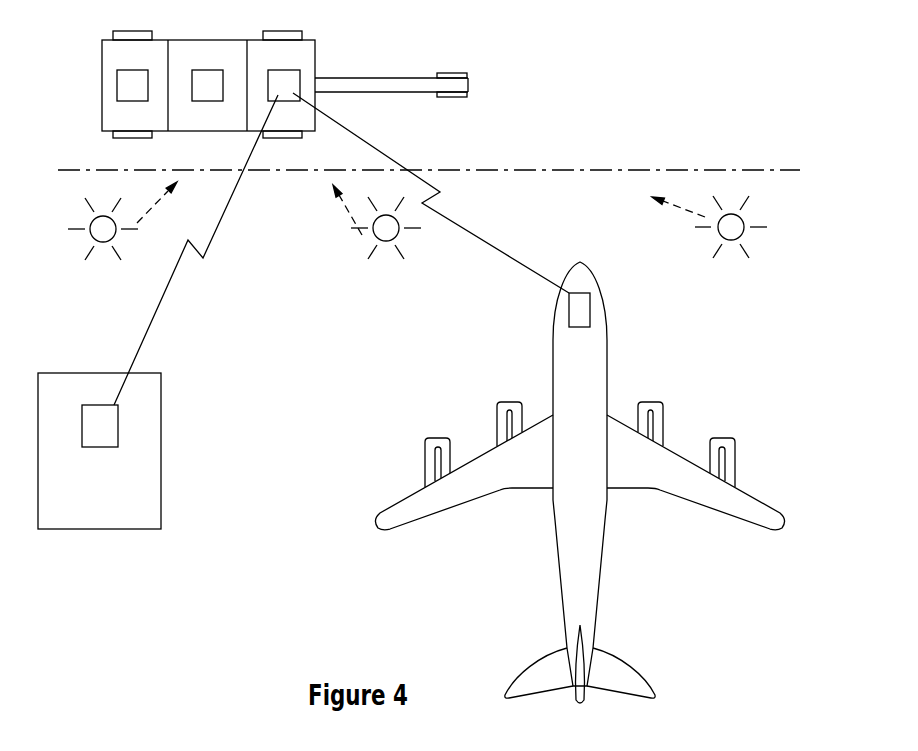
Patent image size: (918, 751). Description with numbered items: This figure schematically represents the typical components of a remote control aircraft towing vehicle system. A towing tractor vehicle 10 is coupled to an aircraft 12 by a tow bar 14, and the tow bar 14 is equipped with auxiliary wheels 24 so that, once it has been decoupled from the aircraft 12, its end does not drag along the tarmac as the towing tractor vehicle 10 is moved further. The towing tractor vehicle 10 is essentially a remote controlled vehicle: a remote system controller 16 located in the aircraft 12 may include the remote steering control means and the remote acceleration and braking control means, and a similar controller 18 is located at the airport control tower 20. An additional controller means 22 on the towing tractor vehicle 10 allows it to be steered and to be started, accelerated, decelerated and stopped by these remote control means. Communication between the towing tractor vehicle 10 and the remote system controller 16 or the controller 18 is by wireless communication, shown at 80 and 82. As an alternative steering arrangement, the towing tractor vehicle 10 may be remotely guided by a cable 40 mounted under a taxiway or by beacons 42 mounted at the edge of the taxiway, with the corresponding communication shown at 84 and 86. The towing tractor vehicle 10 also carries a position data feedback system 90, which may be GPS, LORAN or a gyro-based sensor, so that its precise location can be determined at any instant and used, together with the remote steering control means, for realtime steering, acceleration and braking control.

The towing tractor vehicle 10 is at (307, 33).
The aircraft 12 is at (593, 545).
The tow bar 14 is at (360, 78).
The remote system controller 16 is at (590, 310).
The controller 18 is at (110, 430).
The airport control tower 20 is at (147, 498).
The controller means 22 is at (122, 89).
The auxiliary wheels 24 is at (450, 72).
The guidance cable 40 is at (660, 168).
The beacons 42 is at (417, 244).
The wireless communication 80 is at (500, 250).
The wireless communication 82 is at (152, 324).
The communication with guidance cable 84 is at (283, 100).
The communication with beacons 86 is at (150, 208).
The position data feedback system 90 is at (204, 77).